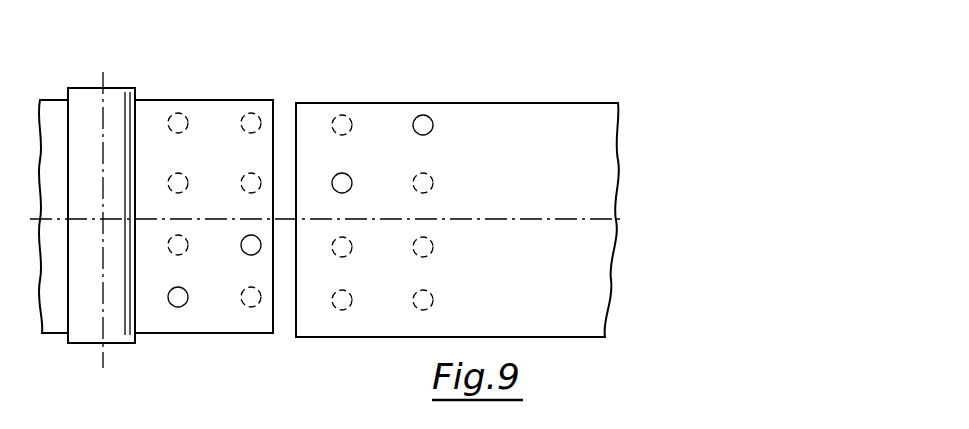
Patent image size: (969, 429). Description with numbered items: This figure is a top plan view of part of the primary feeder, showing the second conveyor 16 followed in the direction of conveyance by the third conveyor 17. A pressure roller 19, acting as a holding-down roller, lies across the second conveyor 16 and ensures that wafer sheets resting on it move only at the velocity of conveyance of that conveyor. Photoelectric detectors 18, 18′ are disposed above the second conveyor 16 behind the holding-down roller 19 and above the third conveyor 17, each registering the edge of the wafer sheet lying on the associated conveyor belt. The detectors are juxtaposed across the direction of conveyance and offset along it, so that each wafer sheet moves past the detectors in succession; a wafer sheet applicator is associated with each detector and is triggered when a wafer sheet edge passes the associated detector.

The second conveyor 16 is at (263, 322).
The third conveyor 17 is at (518, 123).
The photoelectric detector 18 is at (181, 113).
The photoelectric detector 18′ is at (248, 180).
The pressure roller 19 is at (117, 98).